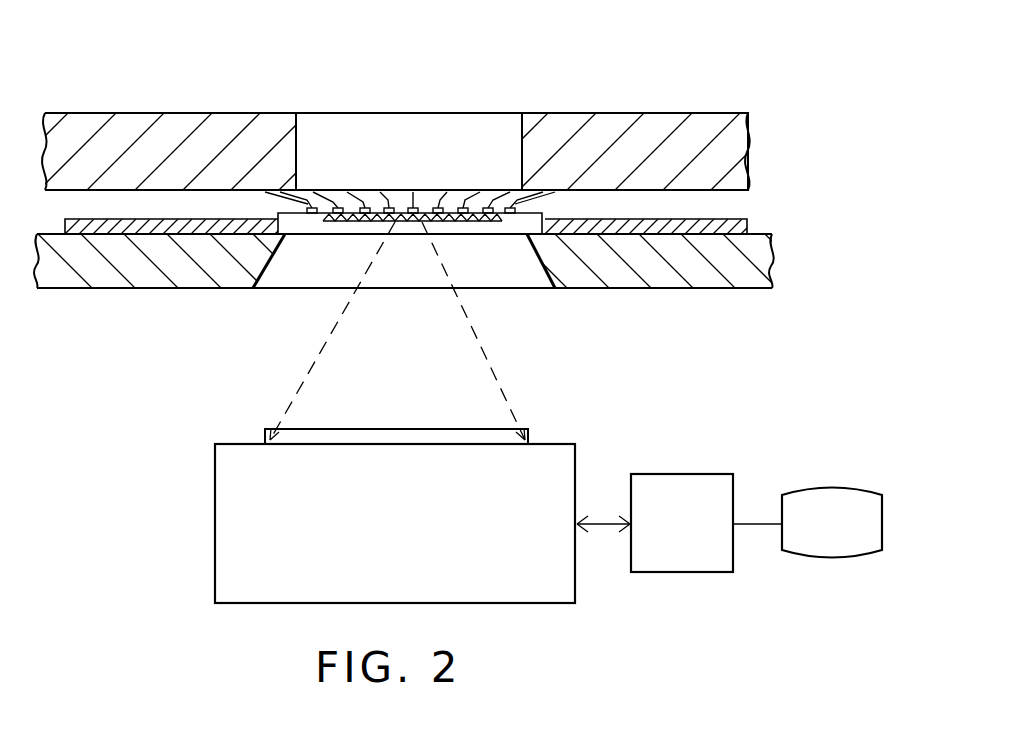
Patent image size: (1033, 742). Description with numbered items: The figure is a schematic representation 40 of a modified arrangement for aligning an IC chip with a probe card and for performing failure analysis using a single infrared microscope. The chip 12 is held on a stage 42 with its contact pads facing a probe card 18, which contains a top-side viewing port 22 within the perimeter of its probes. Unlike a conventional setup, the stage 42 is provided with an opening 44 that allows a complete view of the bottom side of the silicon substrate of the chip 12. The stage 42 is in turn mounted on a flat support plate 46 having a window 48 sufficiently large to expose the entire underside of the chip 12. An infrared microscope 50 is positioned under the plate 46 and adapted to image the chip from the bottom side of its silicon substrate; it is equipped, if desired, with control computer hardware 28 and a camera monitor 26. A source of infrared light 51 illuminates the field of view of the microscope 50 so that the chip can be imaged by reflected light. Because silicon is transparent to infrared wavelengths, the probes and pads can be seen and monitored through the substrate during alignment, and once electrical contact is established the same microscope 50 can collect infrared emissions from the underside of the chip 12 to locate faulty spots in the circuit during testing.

The schematic representation 40 is at (672, 60).
The probe card 18 is at (695, 130).
The top-side viewing port 22 is at (492, 138).
The stage 42 is at (745, 228).
The opening 44 is at (300, 235).
The flat support plate 46 is at (653, 268).
The window 48 is at (328, 288).
The chip 12 is at (513, 223).
The infrared microscope 50 is at (215, 497).
The source of infrared light 51 is at (530, 430).
The control computer hardware 28 is at (683, 488).
The camera monitor 26 is at (803, 497).